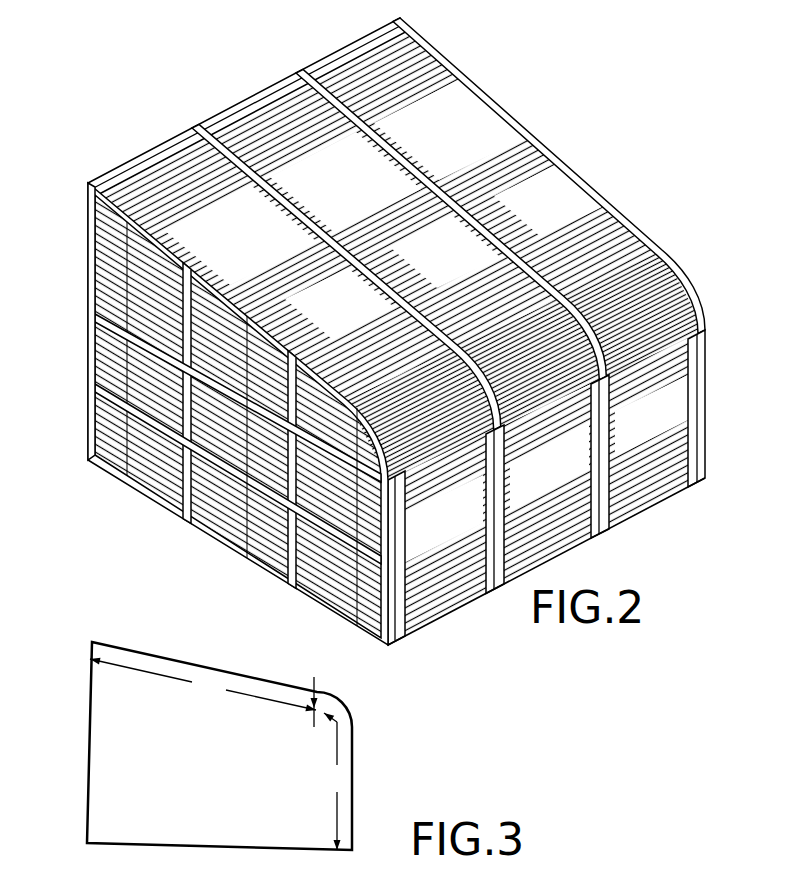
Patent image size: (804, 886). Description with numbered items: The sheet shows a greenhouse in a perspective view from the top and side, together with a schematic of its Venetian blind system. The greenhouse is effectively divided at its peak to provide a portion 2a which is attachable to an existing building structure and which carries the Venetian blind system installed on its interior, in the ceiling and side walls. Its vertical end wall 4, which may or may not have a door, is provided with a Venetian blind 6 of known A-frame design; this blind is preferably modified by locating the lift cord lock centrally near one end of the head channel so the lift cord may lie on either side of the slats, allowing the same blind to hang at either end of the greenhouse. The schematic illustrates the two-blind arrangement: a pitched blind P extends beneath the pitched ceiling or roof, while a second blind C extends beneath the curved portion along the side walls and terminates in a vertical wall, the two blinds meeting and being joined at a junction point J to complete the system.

In FIG. 2, the greenhouse portion 2a is at (364, 331).
In FIG. 2, the end wall 4 is at (88, 382).
In FIG. 2, the Venetian blind 6 is at (142, 258).
In FIG. 3, the pitched blind P is at (203, 684).
In FIG. 3, the junction point J is at (310, 687).
In FIG. 3, the curved portion blind C is at (335, 781).